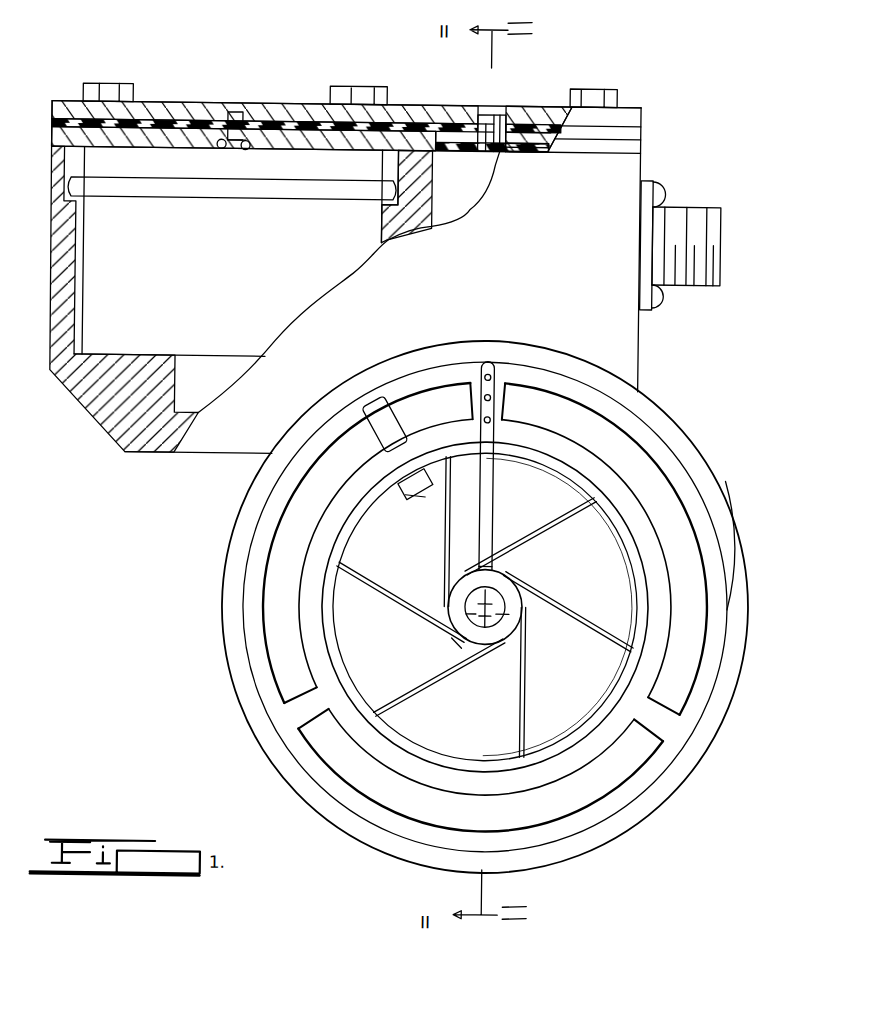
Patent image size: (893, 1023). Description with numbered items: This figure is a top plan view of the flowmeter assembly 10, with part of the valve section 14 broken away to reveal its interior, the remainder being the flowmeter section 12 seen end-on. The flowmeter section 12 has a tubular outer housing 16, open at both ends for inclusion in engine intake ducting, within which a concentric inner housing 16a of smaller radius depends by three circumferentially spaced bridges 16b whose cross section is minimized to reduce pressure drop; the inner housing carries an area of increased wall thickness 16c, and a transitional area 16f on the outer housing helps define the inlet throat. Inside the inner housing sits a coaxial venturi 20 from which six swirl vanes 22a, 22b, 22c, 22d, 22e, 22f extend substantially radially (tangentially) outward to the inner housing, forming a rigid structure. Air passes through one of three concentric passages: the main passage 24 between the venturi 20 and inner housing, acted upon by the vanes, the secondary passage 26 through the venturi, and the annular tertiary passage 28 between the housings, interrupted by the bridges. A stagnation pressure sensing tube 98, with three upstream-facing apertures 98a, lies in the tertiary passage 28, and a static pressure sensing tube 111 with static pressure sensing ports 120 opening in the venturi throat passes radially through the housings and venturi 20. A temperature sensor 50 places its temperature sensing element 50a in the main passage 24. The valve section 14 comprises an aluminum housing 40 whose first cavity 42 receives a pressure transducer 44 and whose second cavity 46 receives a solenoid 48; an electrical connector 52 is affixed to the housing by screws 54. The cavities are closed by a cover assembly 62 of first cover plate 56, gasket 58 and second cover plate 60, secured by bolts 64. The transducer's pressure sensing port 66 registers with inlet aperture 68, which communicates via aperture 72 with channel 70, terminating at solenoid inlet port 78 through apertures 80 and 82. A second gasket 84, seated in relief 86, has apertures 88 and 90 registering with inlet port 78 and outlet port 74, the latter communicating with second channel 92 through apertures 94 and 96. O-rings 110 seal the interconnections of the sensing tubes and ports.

The flowmeter assembly 10 is at (112, 548).
The flowmeter section 12 is at (212, 592).
The valve section 14 is at (77, 432).
The outer housing 16 is at (709, 494).
The inner housing 16a is at (641, 563).
The bridges 16b is at (291, 707).
The area of increased wall thickness 16c is at (647, 573).
The transitional area 16f is at (721, 522).
The venturi 20 is at (512, 584).
The swirl vane 22a is at (588, 639).
The swirl vane 22b is at (528, 690).
The swirl vane 22c is at (441, 690).
The swirl vane 22d is at (400, 606).
The swirl vane 22e is at (442, 546).
The swirl vane 22f is at (559, 509).
The main passage 24 is at (549, 607).
The secondary passage 26 is at (505, 610).
The tertiary passage 28 is at (524, 809).
The housing 40 is at (141, 441).
The first cavity 42 is at (74, 160).
The pressure transducer 44 is at (236, 274).
The second cavity 46 is at (389, 156).
The solenoid 48 is at (465, 216).
The temperature sensor 50 is at (393, 434).
The temperature sensing element 50a is at (414, 498).
The electrical connector 52 is at (708, 229).
The screws 54 is at (655, 192).
The first cover plate 56 is at (629, 138).
The gasket 58 is at (629, 125).
The second cover plate 60 is at (629, 110).
The cover assembly 62 is at (633, 97).
The bolts 64 is at (104, 90).
The pressure sensing port 66 is at (231, 146).
The inlet aperture 68 is at (214, 149).
The channel 70 is at (262, 122).
The aperture 72 is at (231, 115).
The outlet port 74 is at (484, 156).
The inlet port 78 is at (464, 152).
The aperture 80 is at (484, 132).
The aperture 82 is at (471, 115).
The second gasket 84 is at (529, 147).
The relief 86 is at (431, 140).
The aperture 88 is at (451, 135).
The aperture 90 is at (506, 150).
The second channel 92 is at (499, 140).
The aperture 94 is at (521, 125).
The aperture 96 is at (506, 140).
The stagnation pressure sensing tube 98 is at (488, 364).
The apertures 98a is at (478, 418).
The o-rings 110 is at (243, 151).
The static pressure sensing tube 111 is at (489, 478).
The static pressure sensing ports 120 is at (455, 638).